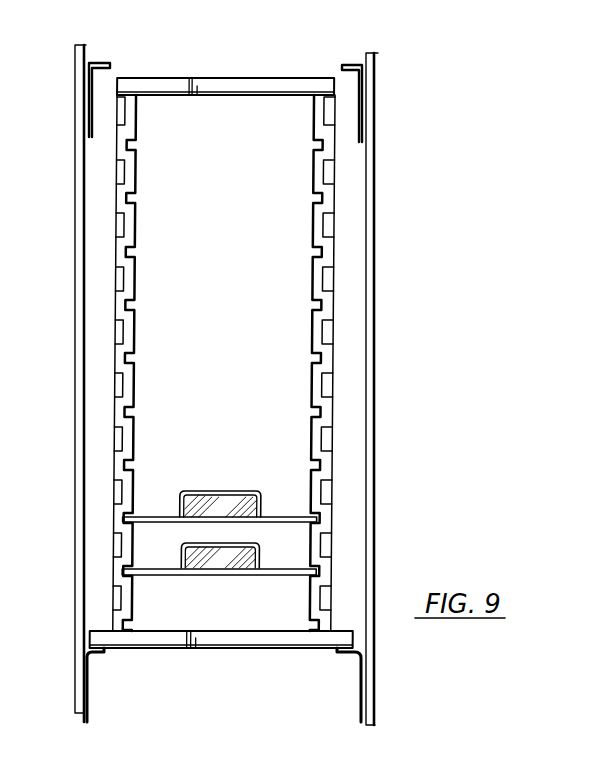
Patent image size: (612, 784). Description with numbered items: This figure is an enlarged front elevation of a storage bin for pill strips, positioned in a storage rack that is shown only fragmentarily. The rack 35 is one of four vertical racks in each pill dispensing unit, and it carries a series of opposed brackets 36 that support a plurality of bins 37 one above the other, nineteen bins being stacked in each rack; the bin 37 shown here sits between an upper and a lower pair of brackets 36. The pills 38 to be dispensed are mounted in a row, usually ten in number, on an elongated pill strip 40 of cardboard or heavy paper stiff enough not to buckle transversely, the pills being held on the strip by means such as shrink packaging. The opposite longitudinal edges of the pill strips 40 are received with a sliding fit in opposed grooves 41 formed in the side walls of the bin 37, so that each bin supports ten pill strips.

The vertical rack 35 is at (373, 295).
The bracket 36 is at (106, 62).
The bin 37 is at (117, 358).
The pill 38 is at (242, 556).
The pill strip 40 is at (152, 517).
The groove 41 is at (133, 203).